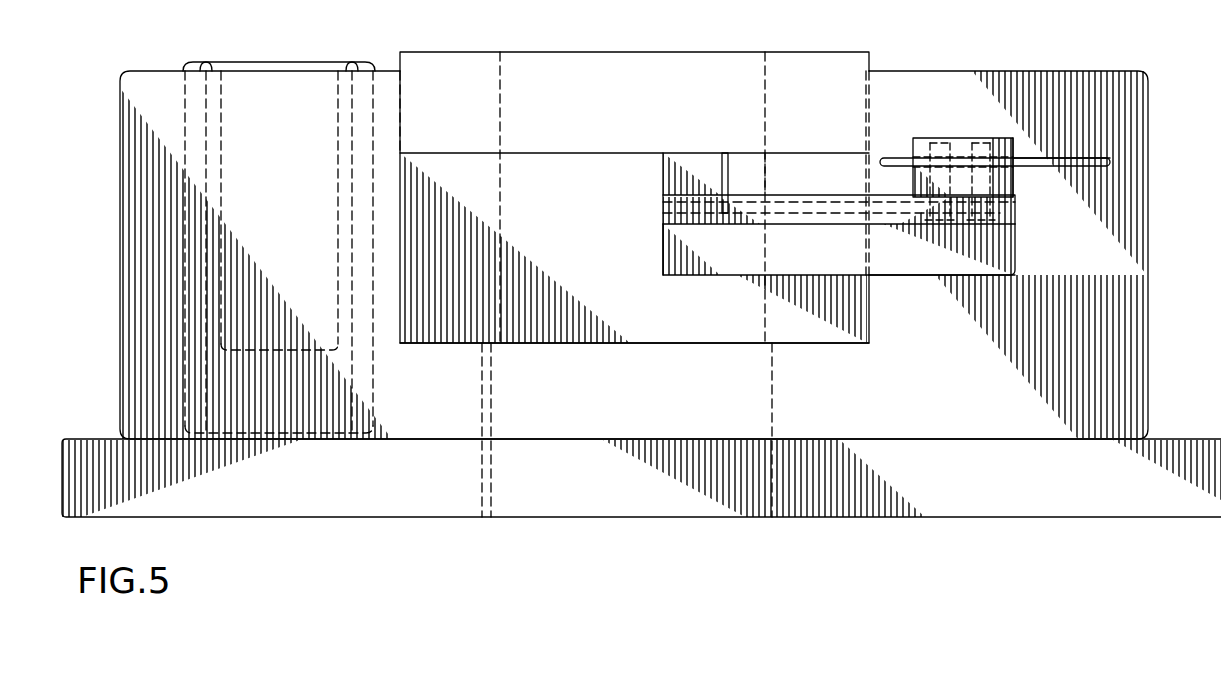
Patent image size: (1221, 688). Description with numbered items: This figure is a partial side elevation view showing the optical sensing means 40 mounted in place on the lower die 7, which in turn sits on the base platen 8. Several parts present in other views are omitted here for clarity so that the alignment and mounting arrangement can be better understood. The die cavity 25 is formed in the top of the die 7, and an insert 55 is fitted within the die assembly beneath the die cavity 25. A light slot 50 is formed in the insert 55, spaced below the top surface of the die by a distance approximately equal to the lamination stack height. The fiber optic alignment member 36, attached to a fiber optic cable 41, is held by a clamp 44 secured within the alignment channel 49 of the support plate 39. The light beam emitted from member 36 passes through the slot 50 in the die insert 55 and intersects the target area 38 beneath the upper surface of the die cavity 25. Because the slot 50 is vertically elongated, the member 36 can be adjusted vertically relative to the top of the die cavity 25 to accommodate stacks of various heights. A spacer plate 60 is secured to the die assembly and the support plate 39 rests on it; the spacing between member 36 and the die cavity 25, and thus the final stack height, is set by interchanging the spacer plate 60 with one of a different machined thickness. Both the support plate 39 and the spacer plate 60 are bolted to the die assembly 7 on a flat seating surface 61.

The lower die 7 is at (1156, 315).
The base platen 8 is at (1025, 503).
The die cavity 25 is at (765, 52).
The fiber optic alignment member 36 is at (895, 158).
The target area 38 is at (766, 175).
The support plate 39 is at (1015, 219).
The optical sensing means 40 is at (969, 132).
The fiber optic cable 41 is at (1090, 163).
The clamp 44 is at (1013, 150).
The alignment channel 49 is at (1013, 197).
The light slot 50 is at (720, 180).
The insert 55 is at (603, 343).
The spacer plate 60 is at (1013, 258).
The flat seating surface 61 is at (903, 277).